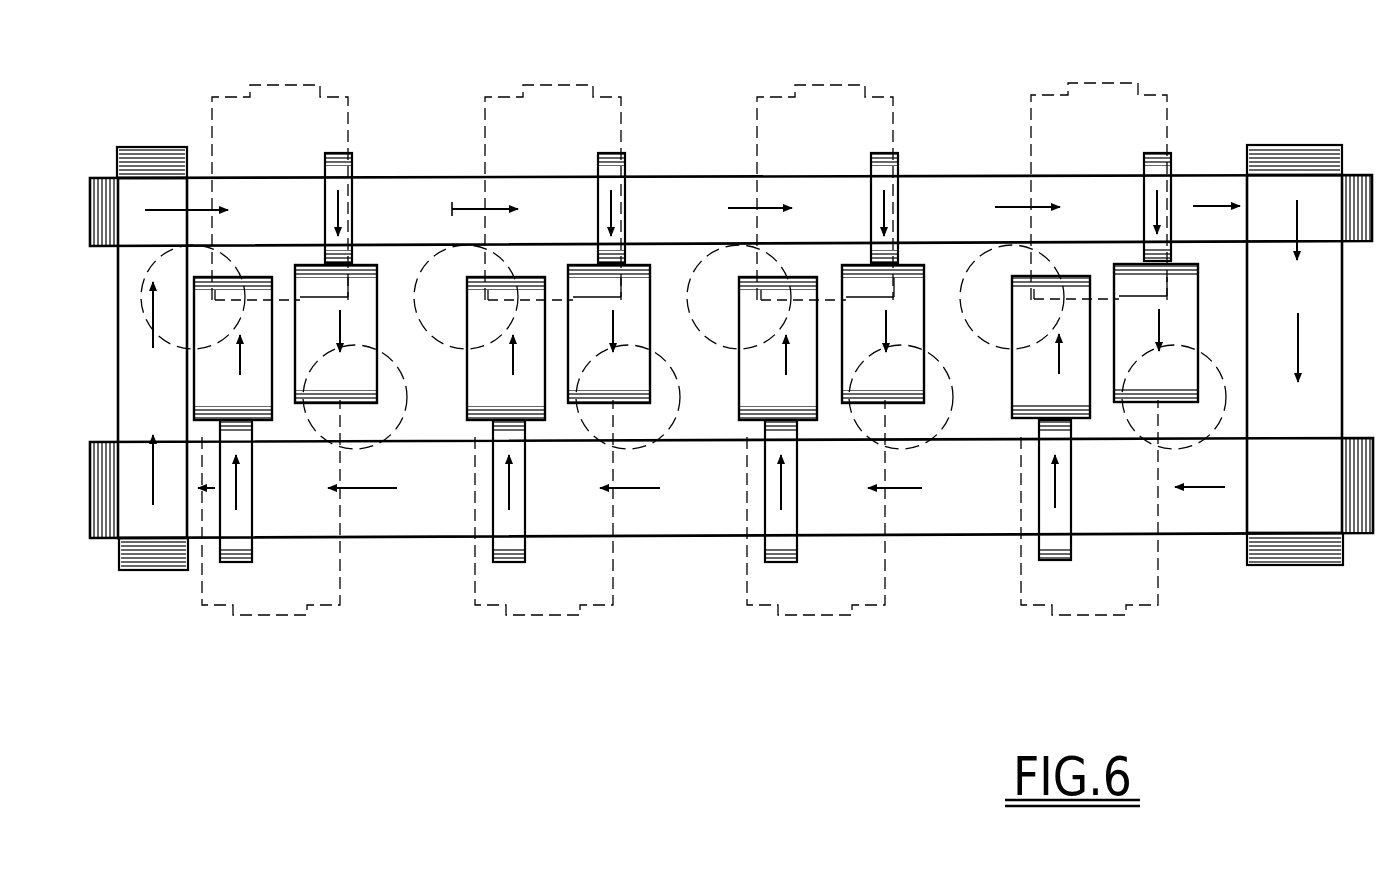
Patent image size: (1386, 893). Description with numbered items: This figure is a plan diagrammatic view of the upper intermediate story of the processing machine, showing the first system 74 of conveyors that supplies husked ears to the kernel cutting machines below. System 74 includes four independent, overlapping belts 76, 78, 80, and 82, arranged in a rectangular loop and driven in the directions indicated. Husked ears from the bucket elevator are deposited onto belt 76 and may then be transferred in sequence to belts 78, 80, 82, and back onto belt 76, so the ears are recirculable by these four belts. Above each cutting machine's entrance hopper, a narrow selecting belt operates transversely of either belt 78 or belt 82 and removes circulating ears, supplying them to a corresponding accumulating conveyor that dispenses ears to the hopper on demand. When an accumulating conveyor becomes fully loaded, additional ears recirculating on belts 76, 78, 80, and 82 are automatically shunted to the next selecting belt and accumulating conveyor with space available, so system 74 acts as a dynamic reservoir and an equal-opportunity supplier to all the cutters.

The first system of conveyors 74 is at (1255, 90).
The belt 76 is at (1342, 330).
The belt 78 is at (662, 523).
The belt 80 is at (125, 338).
The belt 82 is at (668, 185).